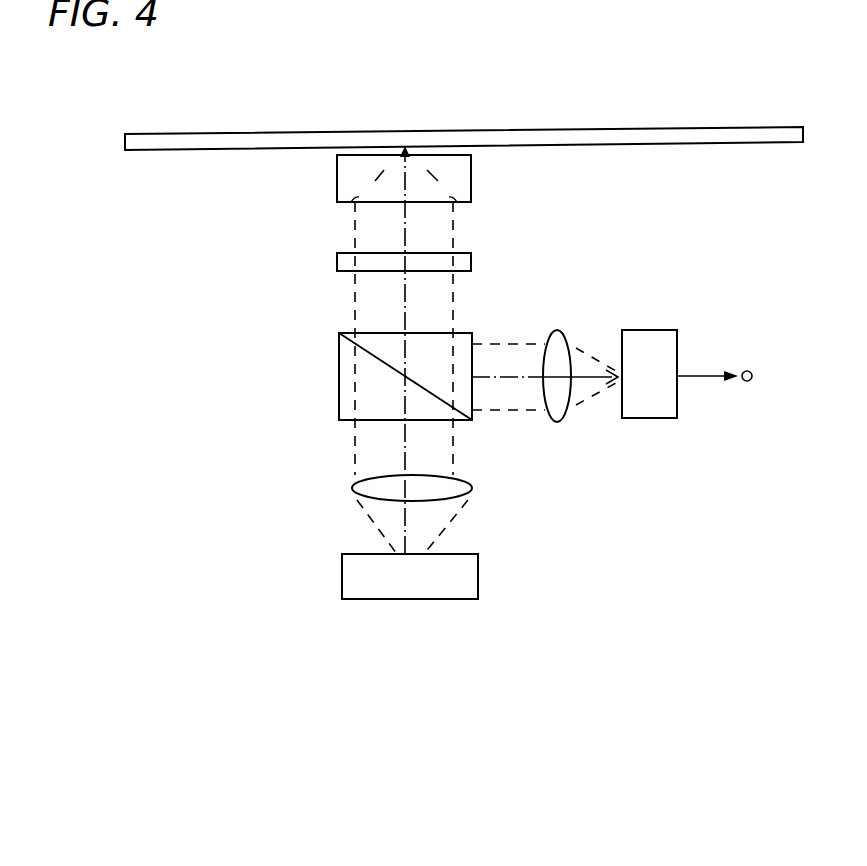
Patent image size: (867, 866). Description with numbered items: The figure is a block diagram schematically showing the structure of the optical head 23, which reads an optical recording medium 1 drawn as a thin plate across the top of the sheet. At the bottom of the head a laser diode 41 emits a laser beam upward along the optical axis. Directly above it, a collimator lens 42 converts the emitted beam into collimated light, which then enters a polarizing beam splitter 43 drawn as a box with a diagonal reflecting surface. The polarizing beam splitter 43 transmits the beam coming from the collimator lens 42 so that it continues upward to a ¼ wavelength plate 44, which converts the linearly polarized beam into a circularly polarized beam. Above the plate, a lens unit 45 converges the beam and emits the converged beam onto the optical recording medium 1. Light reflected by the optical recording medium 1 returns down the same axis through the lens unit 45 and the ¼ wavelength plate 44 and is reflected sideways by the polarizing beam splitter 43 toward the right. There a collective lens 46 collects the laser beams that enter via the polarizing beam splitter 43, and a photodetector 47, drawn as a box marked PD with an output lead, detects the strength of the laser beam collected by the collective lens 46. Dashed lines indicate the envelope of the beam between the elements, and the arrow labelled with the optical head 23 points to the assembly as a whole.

The optical recording medium 1 is at (696, 128).
The optical head 23 is at (536, 483).
The laser diode 41 is at (342, 577).
The collimator lens 42 is at (352, 487).
The polarizing beam splitter 43 is at (339, 377).
The ¼ wavelength plate 44 is at (337, 261).
The lens unit 45 is at (337, 177).
The collective lens 46 is at (558, 330).
The photodetector 47 is at (650, 330).